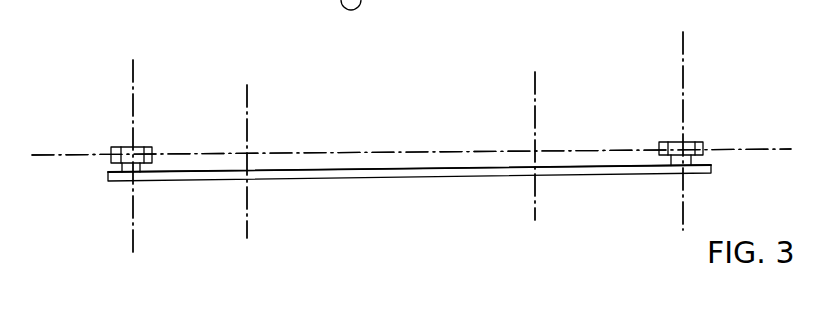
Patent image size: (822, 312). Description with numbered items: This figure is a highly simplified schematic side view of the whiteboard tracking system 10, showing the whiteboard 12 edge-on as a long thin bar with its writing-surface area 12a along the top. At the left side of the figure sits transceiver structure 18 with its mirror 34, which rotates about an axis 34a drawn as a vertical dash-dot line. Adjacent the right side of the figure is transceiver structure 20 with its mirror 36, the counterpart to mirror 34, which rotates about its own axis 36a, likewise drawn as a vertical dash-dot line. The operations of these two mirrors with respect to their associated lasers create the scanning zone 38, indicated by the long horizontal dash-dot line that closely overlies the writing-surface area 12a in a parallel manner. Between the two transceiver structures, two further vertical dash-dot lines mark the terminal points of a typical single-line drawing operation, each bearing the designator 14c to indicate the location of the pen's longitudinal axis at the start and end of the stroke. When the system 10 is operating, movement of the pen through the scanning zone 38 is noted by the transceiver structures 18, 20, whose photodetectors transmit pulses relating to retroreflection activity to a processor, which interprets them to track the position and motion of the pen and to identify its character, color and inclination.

The system 10 is at (505, 53).
The whiteboard 12 is at (404, 179).
The writing-surface area 12a is at (385, 170).
The pen's longitudinal axis 14c is at (571, 93).
The transceiver structure 18 is at (115, 125).
The transceiver structure 20 is at (717, 42).
The mirror 34 is at (148, 147).
The mirror axis 34a is at (133, 89).
The mirror 36 is at (700, 142).
The axis 36a is at (683, 113).
The scanning zone 38 is at (322, 152).